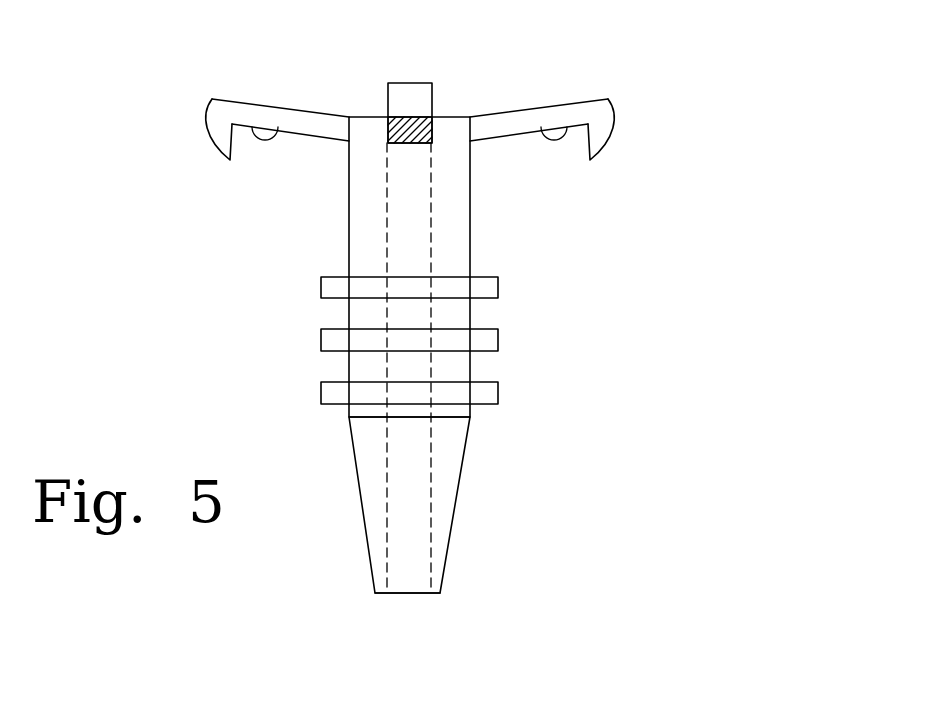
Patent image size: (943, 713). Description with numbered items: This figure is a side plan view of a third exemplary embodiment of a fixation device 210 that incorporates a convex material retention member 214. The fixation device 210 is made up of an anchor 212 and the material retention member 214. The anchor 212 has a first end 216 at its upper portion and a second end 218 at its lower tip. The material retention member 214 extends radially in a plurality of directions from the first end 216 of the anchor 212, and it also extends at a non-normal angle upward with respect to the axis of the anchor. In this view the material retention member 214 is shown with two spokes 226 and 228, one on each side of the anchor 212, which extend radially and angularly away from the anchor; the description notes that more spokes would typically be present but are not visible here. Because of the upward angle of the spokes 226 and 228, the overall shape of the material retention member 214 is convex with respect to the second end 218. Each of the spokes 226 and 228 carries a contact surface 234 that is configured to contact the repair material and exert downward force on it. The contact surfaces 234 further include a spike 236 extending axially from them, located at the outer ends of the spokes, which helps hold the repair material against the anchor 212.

The fixation device 210 is at (673, 68).
The anchor 212 is at (482, 543).
The material retention member 214 is at (636, 106).
The first end 216 is at (372, 98).
The second end 218 is at (360, 600).
The spoke 226 is at (317, 128).
The spoke 228 is at (507, 128).
The contact surface 234 is at (258, 122).
The spike 236 is at (208, 128).